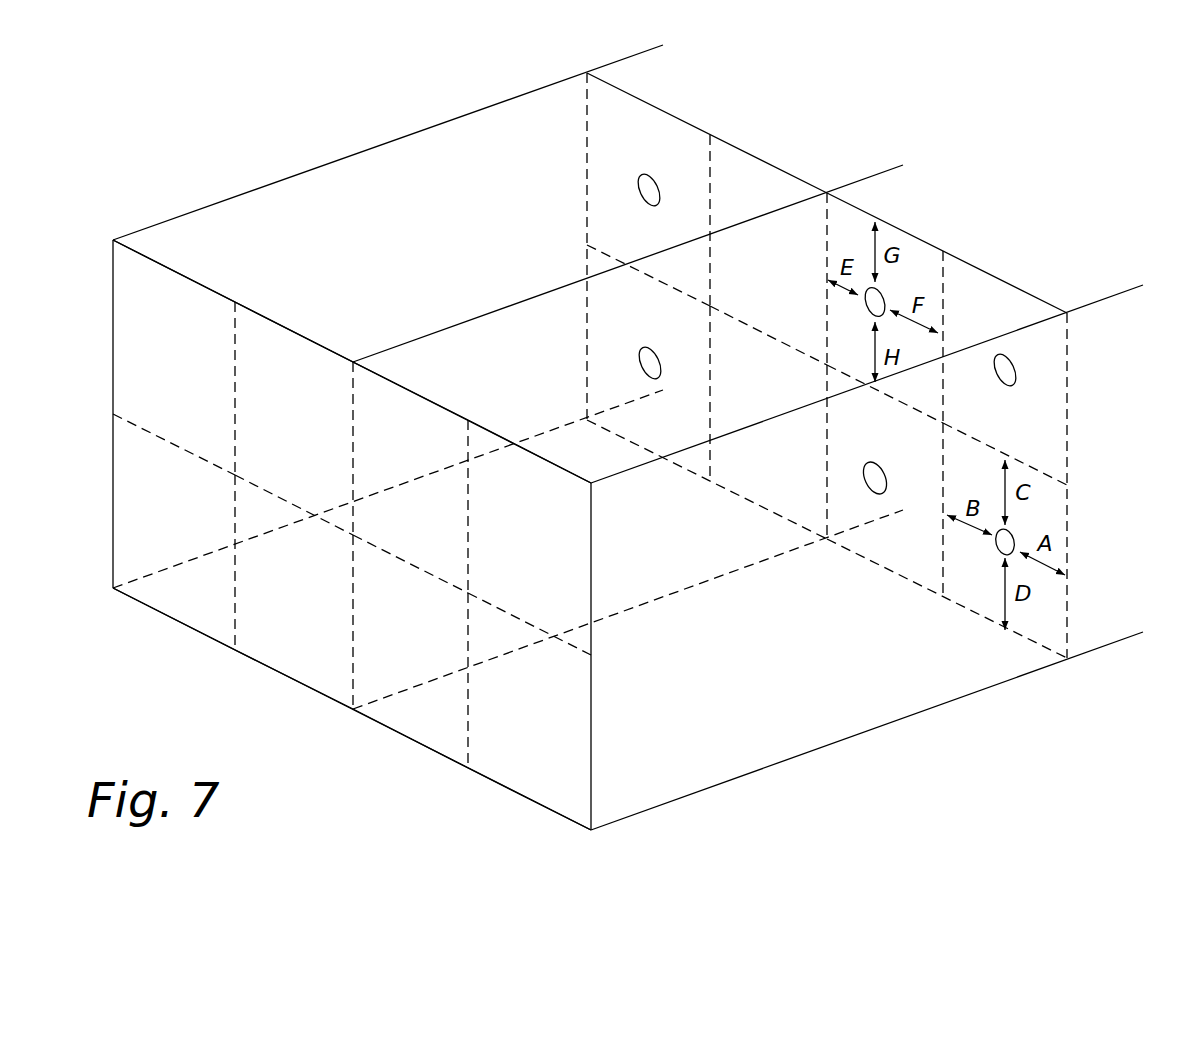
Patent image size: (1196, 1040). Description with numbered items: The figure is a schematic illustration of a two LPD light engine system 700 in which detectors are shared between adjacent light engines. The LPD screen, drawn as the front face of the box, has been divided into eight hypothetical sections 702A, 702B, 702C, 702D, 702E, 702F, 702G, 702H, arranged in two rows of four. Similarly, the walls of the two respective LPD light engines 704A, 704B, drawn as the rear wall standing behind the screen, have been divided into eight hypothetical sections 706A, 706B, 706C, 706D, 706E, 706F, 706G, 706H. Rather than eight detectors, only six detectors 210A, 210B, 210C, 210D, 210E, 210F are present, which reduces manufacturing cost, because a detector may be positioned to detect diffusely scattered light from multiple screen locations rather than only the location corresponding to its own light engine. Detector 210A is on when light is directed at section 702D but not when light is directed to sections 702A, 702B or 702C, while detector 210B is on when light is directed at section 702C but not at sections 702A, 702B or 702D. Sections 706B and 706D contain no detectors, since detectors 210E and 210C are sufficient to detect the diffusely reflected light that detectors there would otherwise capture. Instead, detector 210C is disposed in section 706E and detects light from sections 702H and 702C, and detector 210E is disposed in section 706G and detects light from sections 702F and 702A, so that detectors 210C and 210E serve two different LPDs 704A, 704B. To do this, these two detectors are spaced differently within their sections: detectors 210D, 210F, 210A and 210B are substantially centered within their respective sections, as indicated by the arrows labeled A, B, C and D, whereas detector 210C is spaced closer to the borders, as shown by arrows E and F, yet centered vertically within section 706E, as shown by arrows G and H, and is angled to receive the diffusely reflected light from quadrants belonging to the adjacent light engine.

The two LPD light engine system 700 is at (208, 122).
The hypothetical section of LPD screen 702A is at (144, 348).
The hypothetical section of LPD screen 702B is at (262, 408).
The hypothetical section of LPD screen 702C is at (144, 540).
The hypothetical section of LPD screen 702D is at (265, 598).
The hypothetical section of LPD screen 702E is at (377, 465).
The hypothetical section of LPD screen 702F is at (502, 528).
The hypothetical section of LPD screen 702G is at (379, 656).
The hypothetical section of LPD screen 702H is at (502, 718).
The LPD light engine 704A is at (759, 111).
The LPD light engine 704B is at (992, 223).
The hypothetical section of wall 706A is at (627, 157).
The hypothetical section of wall 706B is at (744, 260).
The hypothetical section of wall 706C is at (604, 328).
The hypothetical section of wall 706D is at (744, 403).
The hypothetical section of wall 706E is at (912, 255).
The hypothetical section of wall 706F is at (970, 326).
The hypothetical section of wall 706G is at (844, 448).
The hypothetical section of wall 706H is at (977, 593).
The detector 210A is at (637, 183).
The detector 210B is at (640, 358).
The detector 210C is at (866, 312).
The detector 210D is at (1013, 362).
The detector 210E is at (866, 476).
The detector 210F is at (1013, 533).